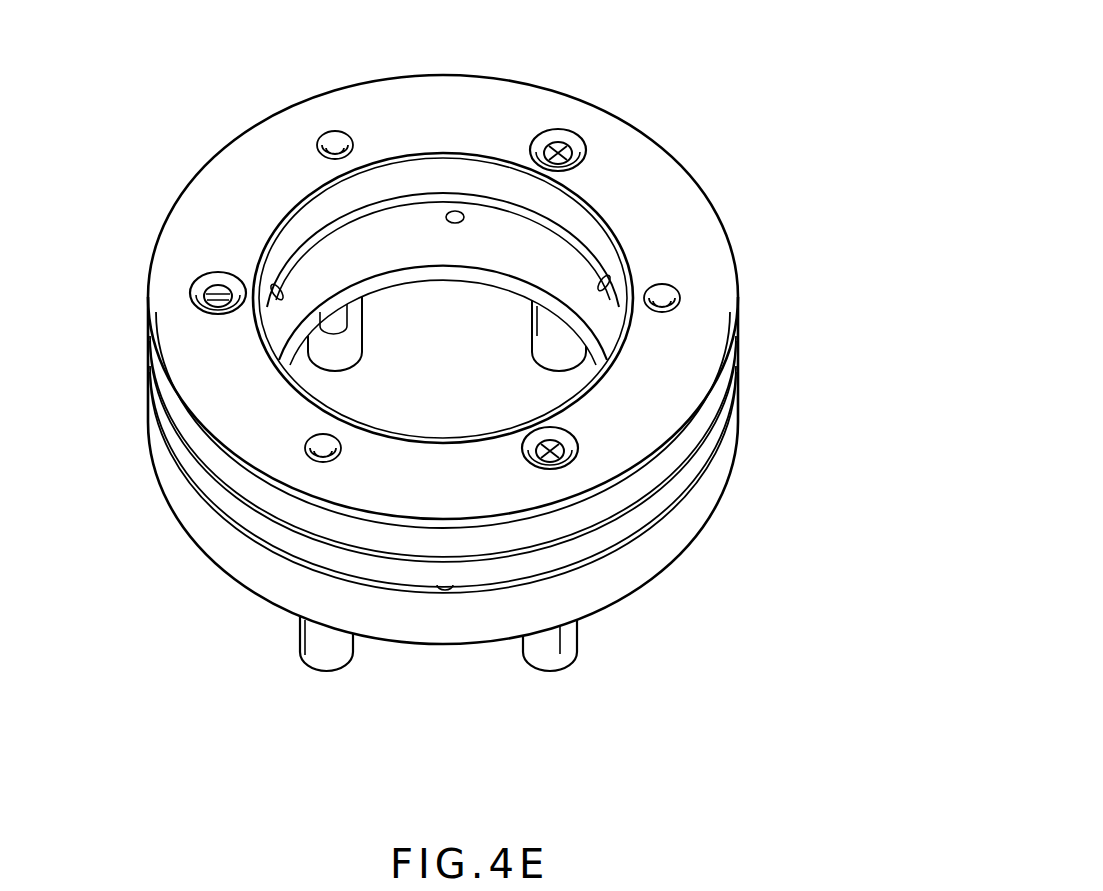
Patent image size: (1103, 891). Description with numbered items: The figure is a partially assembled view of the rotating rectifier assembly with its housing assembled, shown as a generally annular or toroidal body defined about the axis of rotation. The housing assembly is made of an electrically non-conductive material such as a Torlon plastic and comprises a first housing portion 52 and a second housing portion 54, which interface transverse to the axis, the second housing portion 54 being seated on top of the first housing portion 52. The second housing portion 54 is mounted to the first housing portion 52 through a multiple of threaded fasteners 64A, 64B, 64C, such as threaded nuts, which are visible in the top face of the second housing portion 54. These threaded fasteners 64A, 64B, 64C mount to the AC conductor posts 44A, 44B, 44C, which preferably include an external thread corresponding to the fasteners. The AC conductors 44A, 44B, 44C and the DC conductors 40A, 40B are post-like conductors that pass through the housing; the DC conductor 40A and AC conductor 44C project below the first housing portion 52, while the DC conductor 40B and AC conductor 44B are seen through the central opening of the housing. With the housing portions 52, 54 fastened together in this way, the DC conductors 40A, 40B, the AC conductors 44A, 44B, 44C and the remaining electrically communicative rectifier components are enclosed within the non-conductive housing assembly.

The first housing portion 52 is at (668, 543).
The second housing portion 54 is at (712, 298).
The DC conductor 40A is at (305, 648).
The DC conductor 40B is at (348, 360).
The AC conductor 44A is at (228, 288).
The AC conductor 44B is at (538, 320).
The AC conductor 44C is at (562, 648).
The threaded fastener 64A is at (211, 292).
The threaded fastener 64B is at (565, 143).
The threaded fastener 64C is at (577, 447).